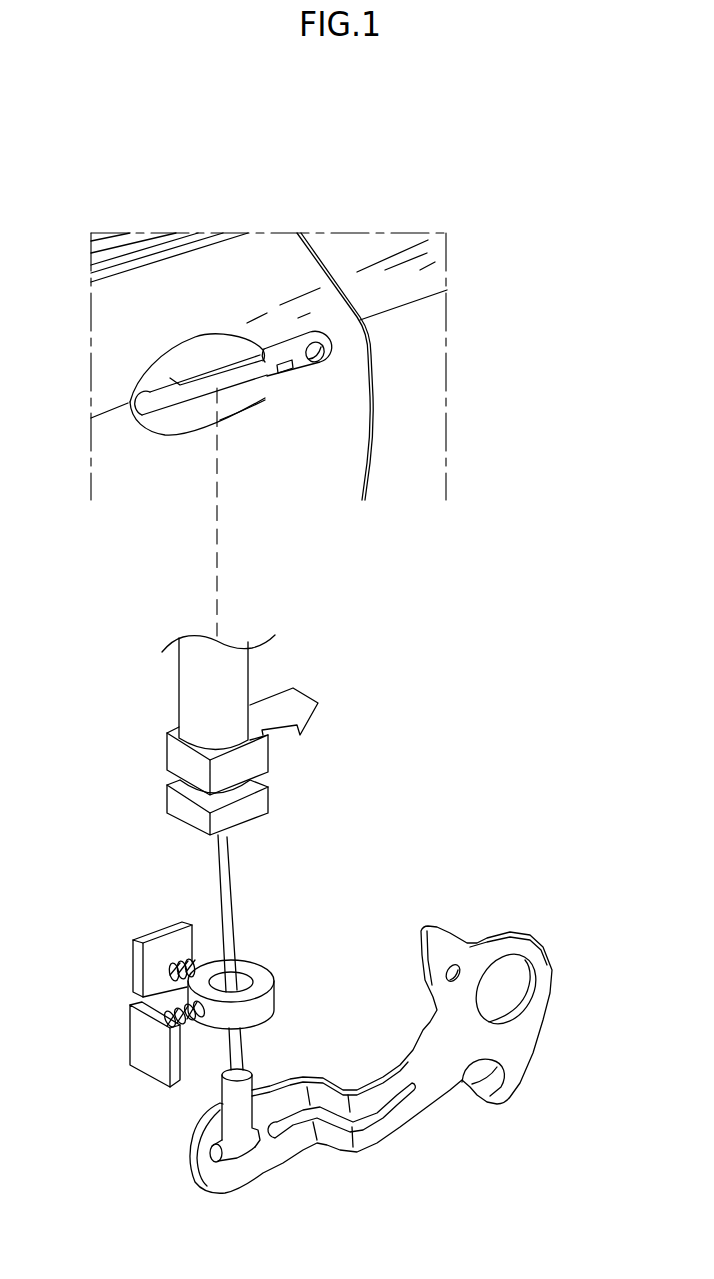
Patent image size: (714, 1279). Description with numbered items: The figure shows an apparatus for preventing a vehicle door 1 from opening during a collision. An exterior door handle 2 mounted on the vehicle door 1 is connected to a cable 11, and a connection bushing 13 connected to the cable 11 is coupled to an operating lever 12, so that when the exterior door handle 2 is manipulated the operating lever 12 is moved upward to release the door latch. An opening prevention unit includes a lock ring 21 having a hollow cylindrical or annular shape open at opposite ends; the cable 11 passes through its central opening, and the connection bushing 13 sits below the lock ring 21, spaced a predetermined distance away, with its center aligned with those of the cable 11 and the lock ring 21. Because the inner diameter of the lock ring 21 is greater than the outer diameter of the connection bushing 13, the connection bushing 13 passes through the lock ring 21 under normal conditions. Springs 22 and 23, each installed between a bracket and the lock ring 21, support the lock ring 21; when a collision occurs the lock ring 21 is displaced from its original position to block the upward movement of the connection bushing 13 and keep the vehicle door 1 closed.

The vehicle door 1 is at (267, 292).
The exterior door handle 2 is at (252, 380).
The cable 11 is at (217, 872).
The operating lever 12 is at (427, 1082).
The connection bushing 13 is at (238, 1112).
The lock ring 21 is at (225, 1018).
The spring 22 is at (172, 968).
The spring 23 is at (168, 1015).